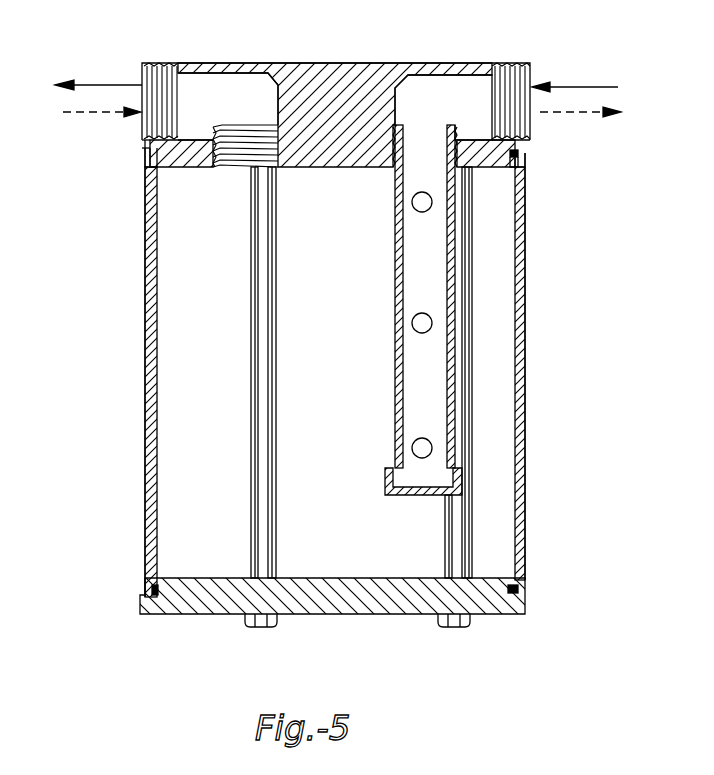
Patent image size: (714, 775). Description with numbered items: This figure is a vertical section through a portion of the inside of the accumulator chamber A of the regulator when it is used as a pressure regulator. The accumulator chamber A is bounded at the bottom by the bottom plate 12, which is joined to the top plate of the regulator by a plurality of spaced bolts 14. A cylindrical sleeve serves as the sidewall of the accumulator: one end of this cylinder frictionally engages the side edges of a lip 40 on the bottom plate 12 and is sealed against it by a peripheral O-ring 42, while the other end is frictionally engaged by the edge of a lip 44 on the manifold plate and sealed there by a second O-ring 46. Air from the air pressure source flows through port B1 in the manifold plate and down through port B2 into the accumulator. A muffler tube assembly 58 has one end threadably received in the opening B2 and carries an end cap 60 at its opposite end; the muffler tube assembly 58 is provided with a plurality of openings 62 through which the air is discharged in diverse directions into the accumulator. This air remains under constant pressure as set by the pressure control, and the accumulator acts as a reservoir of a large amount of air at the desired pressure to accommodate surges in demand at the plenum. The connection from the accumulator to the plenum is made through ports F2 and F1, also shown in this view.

The bottom plate 12 is at (372, 600).
The bolts 14 is at (265, 557).
The lip 40 is at (518, 584).
The O-ring 42 is at (522, 592).
The lip 44 is at (520, 162).
The second O-ring 46 is at (516, 152).
The muffler tube assembly 58 is at (396, 297).
The end cap 60 is at (386, 491).
The openings 62 is at (411, 202).
The accumulator chamber A is at (545, 356).
The port F1 is at (143, 85).
The port F2 is at (237, 168).
The port B1 is at (530, 80).
The port B2 is at (445, 158).